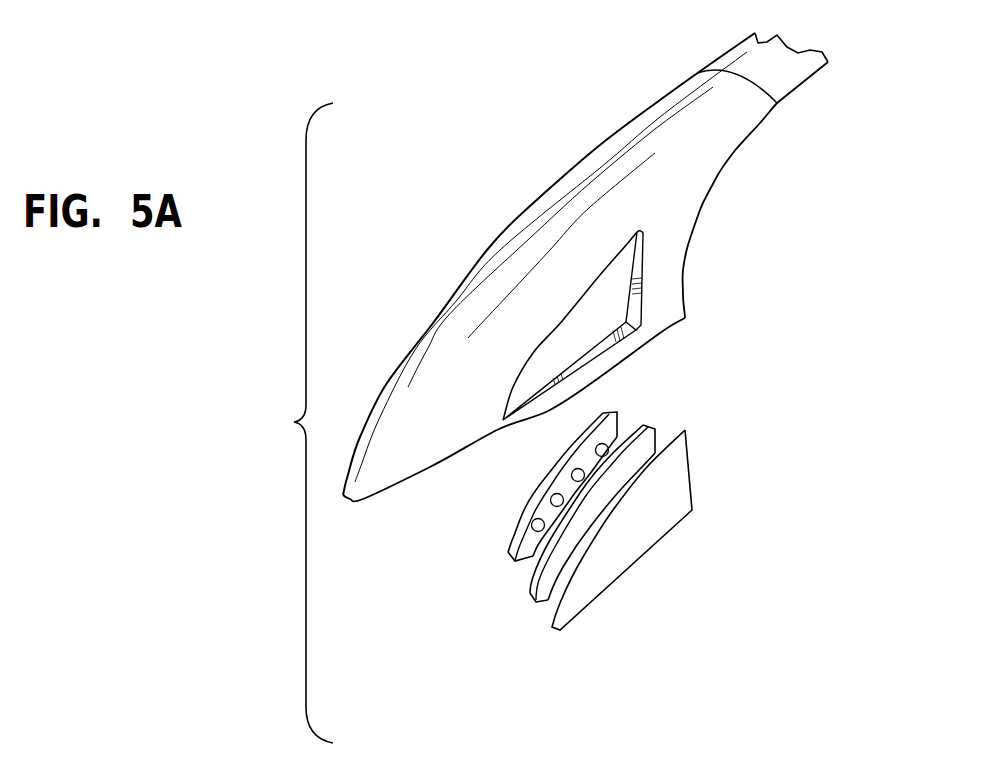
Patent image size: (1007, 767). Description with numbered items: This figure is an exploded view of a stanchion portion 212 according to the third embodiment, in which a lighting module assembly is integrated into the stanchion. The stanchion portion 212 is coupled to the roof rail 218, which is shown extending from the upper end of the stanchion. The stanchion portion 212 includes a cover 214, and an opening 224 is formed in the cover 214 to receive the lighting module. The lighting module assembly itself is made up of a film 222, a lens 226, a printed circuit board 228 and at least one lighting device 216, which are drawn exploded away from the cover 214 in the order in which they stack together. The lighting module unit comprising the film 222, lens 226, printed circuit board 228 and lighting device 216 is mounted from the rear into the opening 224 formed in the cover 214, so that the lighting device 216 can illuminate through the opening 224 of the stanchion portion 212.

The stanchion portion 212 is at (293, 423).
The cover 214 is at (713, 162).
The lighting device 216 is at (632, 421).
The roof rail 218 is at (777, 71).
The film 222 is at (692, 494).
The opening 224 is at (637, 307).
The lens 226 is at (532, 601).
The printed circuit board 228 is at (507, 535).